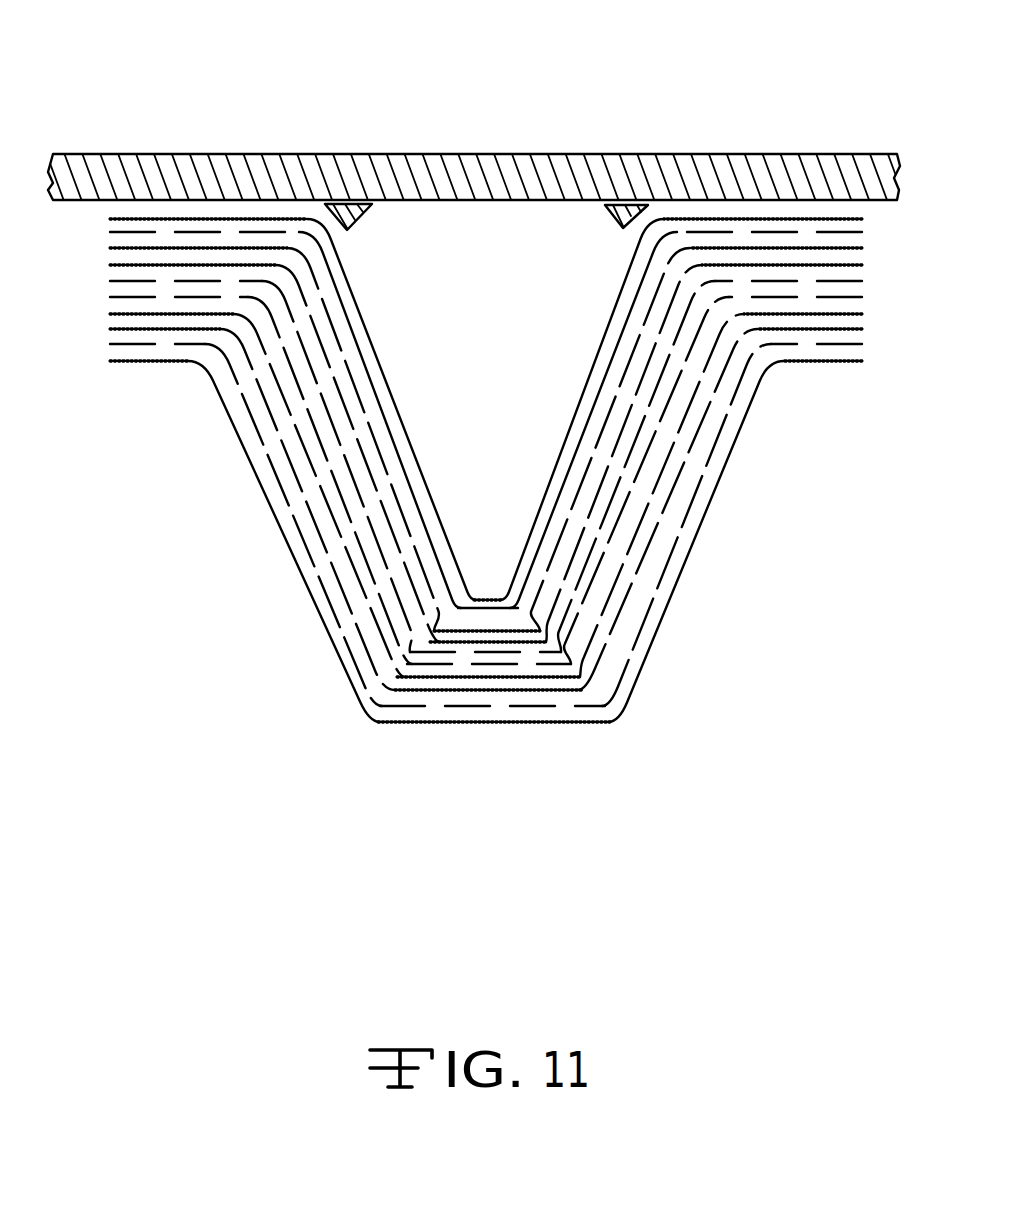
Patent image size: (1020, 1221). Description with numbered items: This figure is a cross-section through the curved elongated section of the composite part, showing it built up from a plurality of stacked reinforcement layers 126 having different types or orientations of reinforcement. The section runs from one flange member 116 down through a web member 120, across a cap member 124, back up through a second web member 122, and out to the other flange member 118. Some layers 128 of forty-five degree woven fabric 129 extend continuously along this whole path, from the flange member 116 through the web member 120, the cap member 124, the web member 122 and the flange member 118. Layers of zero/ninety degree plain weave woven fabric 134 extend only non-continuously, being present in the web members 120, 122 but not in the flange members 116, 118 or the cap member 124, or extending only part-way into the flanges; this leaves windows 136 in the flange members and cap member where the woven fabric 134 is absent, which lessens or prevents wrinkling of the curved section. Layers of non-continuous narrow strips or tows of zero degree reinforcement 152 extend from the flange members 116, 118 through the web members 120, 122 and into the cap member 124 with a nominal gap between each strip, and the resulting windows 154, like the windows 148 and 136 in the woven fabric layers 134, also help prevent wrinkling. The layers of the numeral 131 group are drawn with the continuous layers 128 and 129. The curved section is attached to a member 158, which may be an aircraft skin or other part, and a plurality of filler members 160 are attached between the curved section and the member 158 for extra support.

The flange member 116 is at (168, 255).
The flange member 118 is at (772, 266).
The web member 120 is at (256, 525).
The web member 122 is at (658, 405).
The cap member 124 is at (480, 663).
The stacked reinforcement layers 126 is at (340, 272).
The layers 128 is at (234, 479).
The 45° (PX) woven fabric 129 is at (234, 487).
The intermediate layer 131 is at (290, 363).
The 0/90° (PW plain weave) woven fabric 134 is at (222, 344).
The windows 136 is at (160, 345).
The windows 148 is at (528, 693).
The non-continuous narrow strips or tows of 0° reinforcement 152 is at (115, 361).
The windows 154 is at (827, 327).
The member 158 is at (652, 163).
The filler members 160 is at (358, 212).